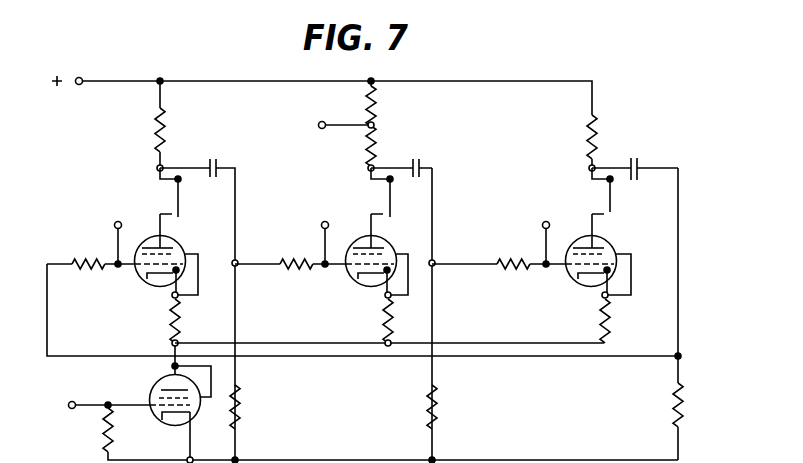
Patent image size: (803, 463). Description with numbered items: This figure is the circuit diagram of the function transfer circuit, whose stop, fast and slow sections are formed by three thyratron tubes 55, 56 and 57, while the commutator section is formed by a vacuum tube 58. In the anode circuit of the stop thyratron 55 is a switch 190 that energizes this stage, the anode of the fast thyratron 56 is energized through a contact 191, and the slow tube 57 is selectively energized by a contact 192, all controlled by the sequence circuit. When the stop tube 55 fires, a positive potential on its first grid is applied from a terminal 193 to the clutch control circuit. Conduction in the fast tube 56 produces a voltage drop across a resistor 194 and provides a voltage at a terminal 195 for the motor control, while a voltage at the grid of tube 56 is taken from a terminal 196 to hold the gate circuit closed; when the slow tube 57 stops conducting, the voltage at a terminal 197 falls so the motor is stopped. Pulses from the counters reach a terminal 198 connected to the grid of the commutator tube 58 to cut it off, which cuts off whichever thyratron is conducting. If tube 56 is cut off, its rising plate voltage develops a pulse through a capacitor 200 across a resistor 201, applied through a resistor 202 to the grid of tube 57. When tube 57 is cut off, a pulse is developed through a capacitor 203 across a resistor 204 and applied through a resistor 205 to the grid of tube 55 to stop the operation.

The thyratron tube 55 is at (176, 245).
The thyratron tube 56 is at (388, 247).
The thyratron tube 57 is at (612, 248).
The commutator tube 58 is at (161, 382).
The switch 190 is at (172, 207).
The contact 191 is at (382, 207).
The contact 192 is at (602, 207).
The terminal 193 is at (114, 225).
The resistor 194 is at (378, 100).
The terminal 195 is at (324, 120).
The terminal 196 is at (321, 225).
The terminal 197 is at (542, 225).
The terminal 198 is at (72, 401).
The capacitor 200 is at (419, 162).
The resistor 201 is at (438, 418).
The resistor 202 is at (518, 273).
The capacitor 203 is at (640, 164).
The resistor 204 is at (685, 418).
The resistor 205 is at (87, 272).